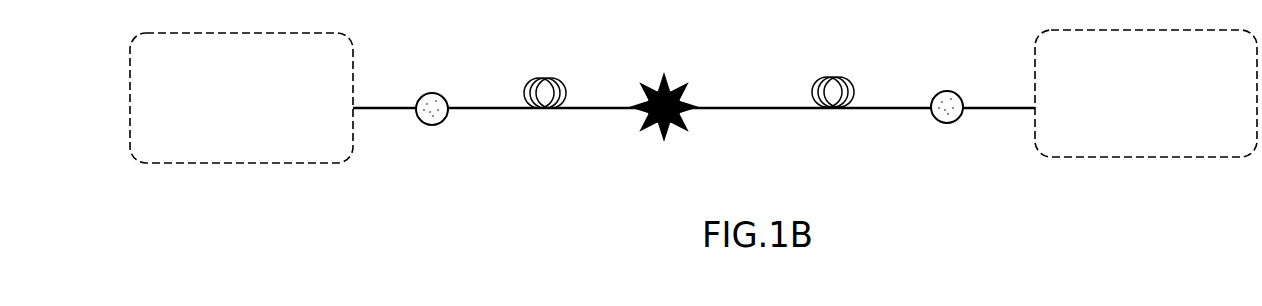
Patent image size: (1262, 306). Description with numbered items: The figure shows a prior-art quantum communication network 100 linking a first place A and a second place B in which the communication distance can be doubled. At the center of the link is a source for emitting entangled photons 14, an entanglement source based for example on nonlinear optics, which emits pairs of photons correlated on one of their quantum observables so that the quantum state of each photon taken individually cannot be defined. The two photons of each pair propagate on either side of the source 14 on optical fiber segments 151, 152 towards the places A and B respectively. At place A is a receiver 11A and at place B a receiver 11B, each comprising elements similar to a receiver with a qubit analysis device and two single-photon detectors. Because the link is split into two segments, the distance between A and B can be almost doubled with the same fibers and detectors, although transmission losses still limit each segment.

The quantum communication network 100 is at (912, 19).
The receiver 11A is at (238, 33).
The receiver 11B is at (1147, 30).
The source for emitting entangled photons 14 is at (678, 80).
The optical fiber segment 151 is at (608, 112).
The optical fiber segment 152 is at (780, 112).